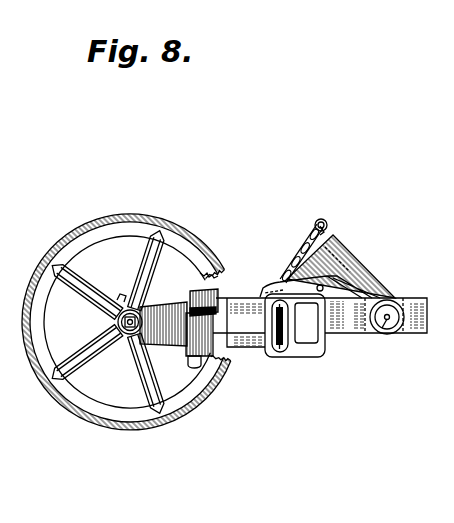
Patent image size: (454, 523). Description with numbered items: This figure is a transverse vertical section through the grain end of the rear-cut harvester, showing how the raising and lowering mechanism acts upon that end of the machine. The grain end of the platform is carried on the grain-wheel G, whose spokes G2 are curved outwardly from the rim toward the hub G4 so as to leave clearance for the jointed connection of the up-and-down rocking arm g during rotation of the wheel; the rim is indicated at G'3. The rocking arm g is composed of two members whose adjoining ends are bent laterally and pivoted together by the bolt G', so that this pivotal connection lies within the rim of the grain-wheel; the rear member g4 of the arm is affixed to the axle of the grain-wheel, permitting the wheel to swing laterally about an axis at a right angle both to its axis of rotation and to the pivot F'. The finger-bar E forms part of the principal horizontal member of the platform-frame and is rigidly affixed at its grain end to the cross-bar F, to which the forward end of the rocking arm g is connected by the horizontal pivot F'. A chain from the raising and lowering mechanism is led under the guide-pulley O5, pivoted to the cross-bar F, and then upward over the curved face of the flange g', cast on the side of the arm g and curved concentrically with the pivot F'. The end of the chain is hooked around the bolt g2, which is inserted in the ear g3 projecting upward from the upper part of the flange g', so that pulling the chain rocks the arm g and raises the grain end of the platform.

The grain-wheel G is at (126, 322).
The spokes G2 is at (108, 322).
The hub G4 is at (104, 323).
The bolt G' is at (219, 318).
The rim section G'3 is at (221, 266).
The rear member g4 is at (163, 326).
The finger-bar E is at (313, 354).
The cross-bar F is at (276, 325).
The horizontal pivot F' is at (377, 333).
The guide-pulley O5 is at (313, 232).
The up-and-down rocking arm g is at (327, 266).
The flange g' is at (322, 253).
The bolt g2 is at (338, 232).
The ear g3 is at (328, 221).